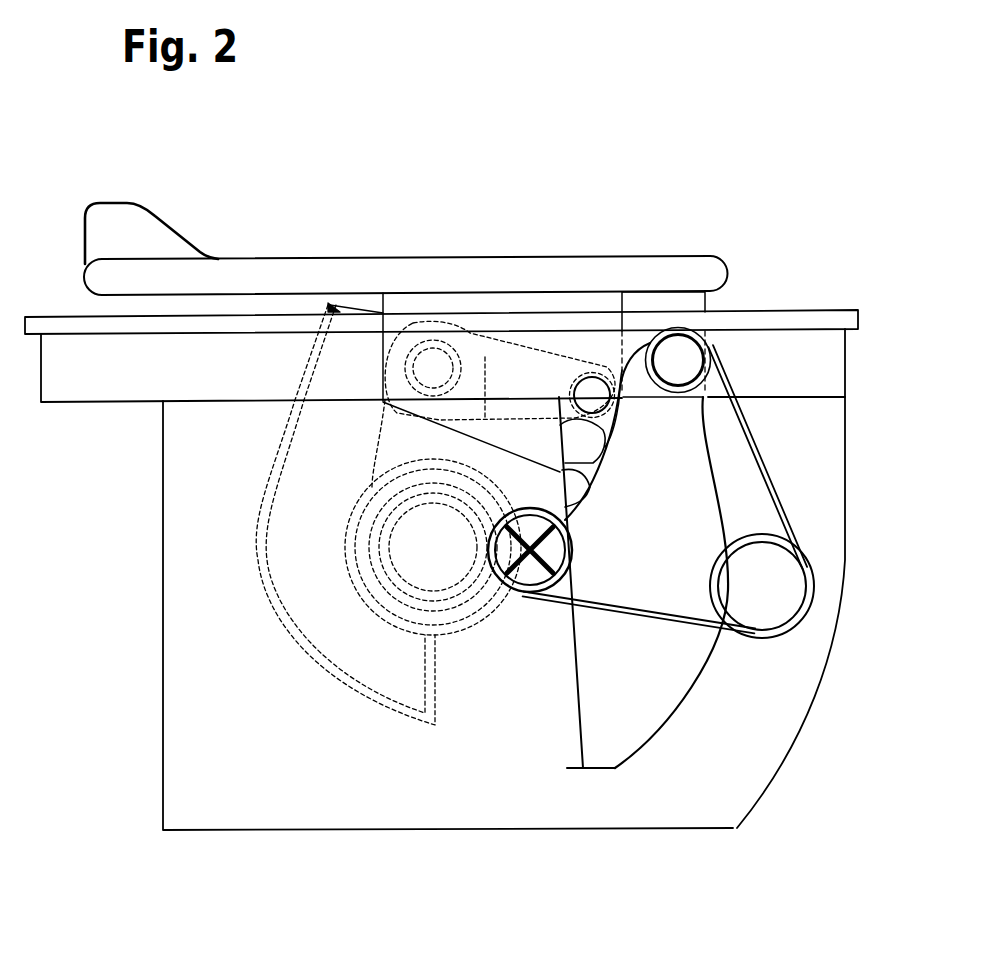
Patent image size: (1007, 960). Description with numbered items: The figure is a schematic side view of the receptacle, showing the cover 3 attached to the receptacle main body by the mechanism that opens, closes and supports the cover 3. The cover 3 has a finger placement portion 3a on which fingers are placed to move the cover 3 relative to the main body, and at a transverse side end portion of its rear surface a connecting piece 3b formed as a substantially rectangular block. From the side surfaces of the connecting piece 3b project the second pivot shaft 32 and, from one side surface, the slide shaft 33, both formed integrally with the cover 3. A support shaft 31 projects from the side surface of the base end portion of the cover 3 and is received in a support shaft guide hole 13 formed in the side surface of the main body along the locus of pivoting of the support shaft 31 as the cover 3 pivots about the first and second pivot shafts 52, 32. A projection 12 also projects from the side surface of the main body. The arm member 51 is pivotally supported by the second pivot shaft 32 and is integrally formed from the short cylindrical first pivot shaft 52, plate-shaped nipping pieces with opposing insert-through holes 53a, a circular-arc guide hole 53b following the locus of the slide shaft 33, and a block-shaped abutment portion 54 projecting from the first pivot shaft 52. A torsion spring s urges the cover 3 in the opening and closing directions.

The cover 3 is at (290, 256).
The finger placement portion 3a is at (147, 215).
The connecting piece 3b is at (625, 300).
The projection 12 is at (535, 575).
The support shaft guide hole 13 is at (640, 753).
The support shaft 31 is at (721, 340).
The second pivot shaft 32 is at (410, 352).
The slide shaft 33 is at (580, 380).
The arm member 51 is at (283, 667).
The first pivot shaft 52 is at (348, 570).
The insert-through hole 53a is at (383, 420).
The guide hole 53b is at (607, 443).
The abutment portion 54 is at (603, 503).
The torsion spring s is at (812, 566).